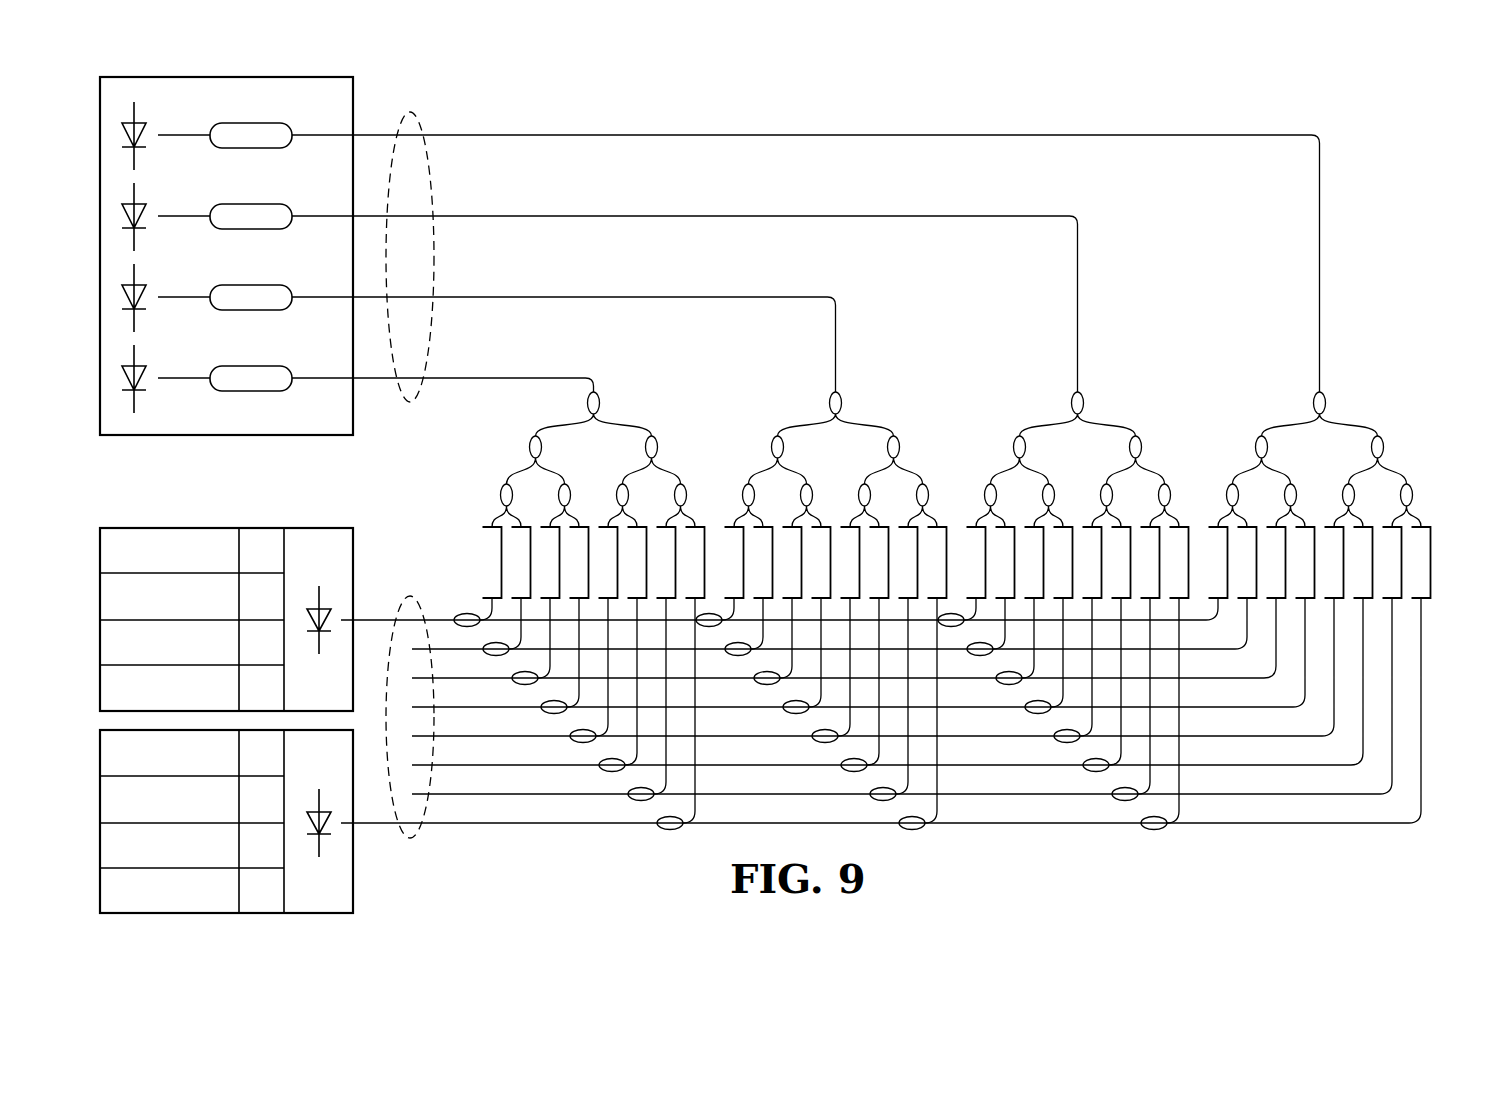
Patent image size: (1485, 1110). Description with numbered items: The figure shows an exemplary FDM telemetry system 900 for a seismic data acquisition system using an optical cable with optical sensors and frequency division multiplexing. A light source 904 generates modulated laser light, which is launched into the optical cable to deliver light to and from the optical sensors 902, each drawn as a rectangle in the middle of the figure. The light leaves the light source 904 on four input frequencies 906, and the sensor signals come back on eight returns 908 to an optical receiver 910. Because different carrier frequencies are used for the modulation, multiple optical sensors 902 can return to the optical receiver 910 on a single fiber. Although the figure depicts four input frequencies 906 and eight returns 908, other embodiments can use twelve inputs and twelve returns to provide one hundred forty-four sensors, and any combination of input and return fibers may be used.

The FDM telemetry system 900 is at (1207, 100).
The optical sensors 902 is at (482, 563).
The light source 904 is at (176, 71).
The input frequencies 906 is at (410, 112).
The returns 908 is at (410, 842).
The optical receiver 910 is at (176, 522).